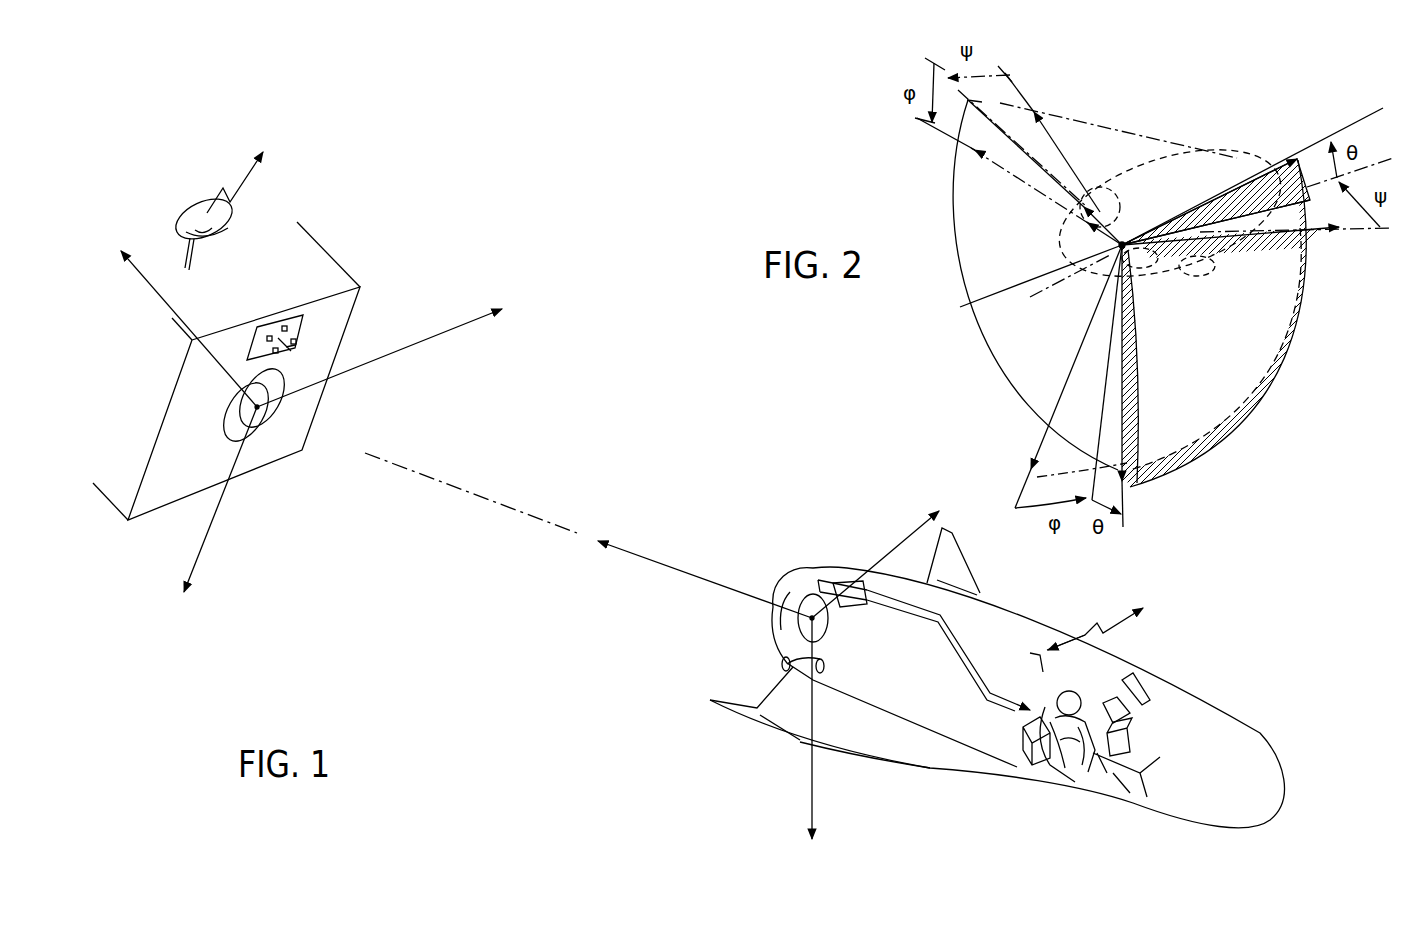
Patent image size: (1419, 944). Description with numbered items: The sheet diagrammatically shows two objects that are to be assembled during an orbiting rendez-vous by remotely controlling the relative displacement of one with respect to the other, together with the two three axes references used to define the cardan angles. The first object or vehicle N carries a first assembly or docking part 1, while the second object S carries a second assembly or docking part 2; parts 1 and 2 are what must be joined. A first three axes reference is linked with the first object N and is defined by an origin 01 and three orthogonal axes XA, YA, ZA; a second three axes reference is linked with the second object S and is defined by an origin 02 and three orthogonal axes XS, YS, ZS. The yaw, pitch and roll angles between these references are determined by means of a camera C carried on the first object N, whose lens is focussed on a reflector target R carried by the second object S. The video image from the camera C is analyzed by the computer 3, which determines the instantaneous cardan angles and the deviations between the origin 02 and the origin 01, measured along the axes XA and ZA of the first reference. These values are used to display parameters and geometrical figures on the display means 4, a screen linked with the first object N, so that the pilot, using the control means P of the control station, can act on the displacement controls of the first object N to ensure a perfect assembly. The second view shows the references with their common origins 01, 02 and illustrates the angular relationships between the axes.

In FIG. 1, the first assembly or docking part 1 is at (773, 633).
In FIG. 1, the second assembly or docking part 2 is at (262, 428).
In FIG. 1, the computer 3 is at (1040, 747).
In FIG. 1, the display means 4 is at (1130, 733).
In FIG. 1, the origin of the first three axes reference 01 is at (833, 647).
In FIG. 2, the origin of the first three axes reference 01 is at (1049, 242).
In FIG. 1, the origin of the second three axes reference 02 is at (255, 404).
In FIG. 2, the origin of the second three axes reference 02 is at (1114, 245).
In FIG. 1, the camera C is at (850, 610).
In FIG. 1, the first object or vehicle N is at (837, 557).
In FIG. 1, the control means P is at (1107, 755).
In FIG. 1, the reflector target R is at (246, 342).
In FIG. 1, the second object S is at (104, 497).
In FIG. 1, the axis XS of the second reference XS is at (172, 313).
In FIG. 1, the axis YS of the second reference YS is at (390, 342).
In FIG. 2, the axis YS of the second reference YS is at (1209, 182).
In FIG. 1, the axis ZS of the second reference ZS is at (220, 502).
In FIG. 2, the axis ZS of the second reference ZS is at (1055, 376).
In FIG. 1, the axis XA of the first reference XA is at (705, 564).
In FIG. 2, the axis XA of the first reference XA is at (1253, 166).
In FIG. 1, the axis YA of the first reference YA is at (881, 550).
In FIG. 2, the axis YA of the first reference YA is at (1256, 242).
In FIG. 1, the axis ZA of the first reference ZA is at (836, 736).
In FIG. 2, the axis ZA of the first reference ZA is at (1142, 396).